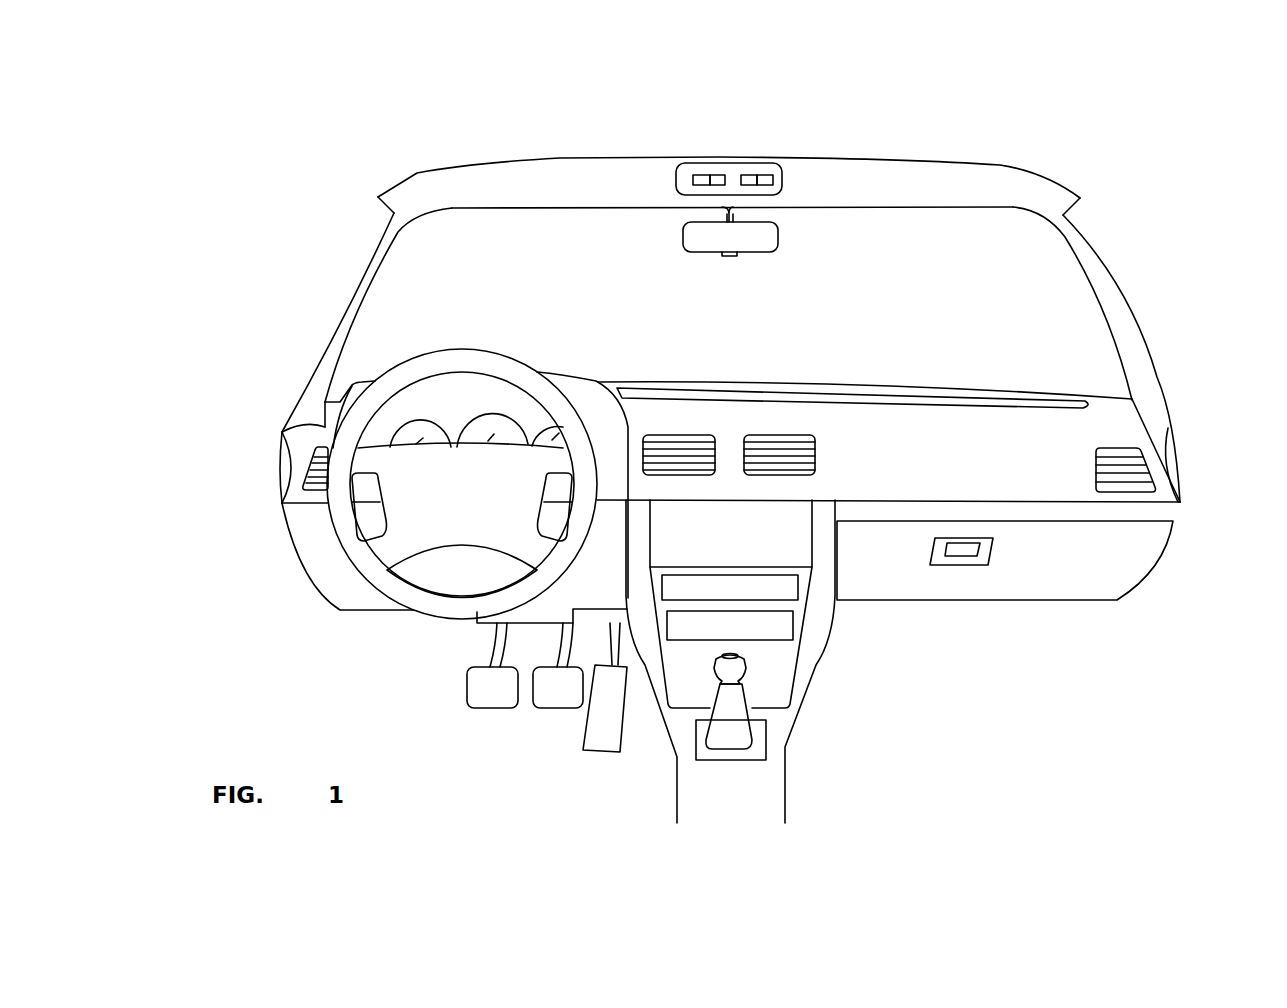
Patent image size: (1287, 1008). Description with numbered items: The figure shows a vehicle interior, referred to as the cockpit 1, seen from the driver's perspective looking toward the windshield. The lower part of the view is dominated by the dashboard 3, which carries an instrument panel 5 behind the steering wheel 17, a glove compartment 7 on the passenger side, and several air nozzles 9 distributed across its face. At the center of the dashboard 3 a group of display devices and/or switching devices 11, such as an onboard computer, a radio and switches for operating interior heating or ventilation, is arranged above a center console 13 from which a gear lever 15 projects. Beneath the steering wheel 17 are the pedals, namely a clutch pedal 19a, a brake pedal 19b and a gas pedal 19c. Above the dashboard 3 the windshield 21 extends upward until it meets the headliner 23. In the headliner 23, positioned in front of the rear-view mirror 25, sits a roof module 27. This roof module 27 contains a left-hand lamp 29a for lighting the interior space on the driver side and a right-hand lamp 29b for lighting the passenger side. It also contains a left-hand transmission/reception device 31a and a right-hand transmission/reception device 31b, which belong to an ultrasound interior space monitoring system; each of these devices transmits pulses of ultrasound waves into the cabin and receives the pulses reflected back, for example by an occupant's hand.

The cockpit 1 is at (1128, 213).
The dashboard 3 is at (1165, 410).
The instrument panel 5 is at (413, 403).
The glove compartment 7 is at (1097, 585).
The air nozzles 9 is at (322, 462).
The display devices and/or switching devices 11 is at (783, 522).
The center console 13 is at (785, 793).
The gear lever 15 is at (745, 695).
The steering wheel 17 is at (422, 612).
The clutch pedal 19a is at (470, 708).
The brake pedal 19b is at (545, 708).
The gas pedal 19c is at (595, 752).
The windshield 21 is at (517, 292).
The headliner 23 is at (1013, 178).
The rear-view mirror 25 is at (731, 257).
The roof module 27 is at (780, 188).
The left-hand lamp 29a is at (694, 177).
The right-hand lamp 29b is at (767, 177).
The left-hand transmission/reception device 31a is at (712, 177).
The right-hand transmission/reception device 31b is at (750, 177).